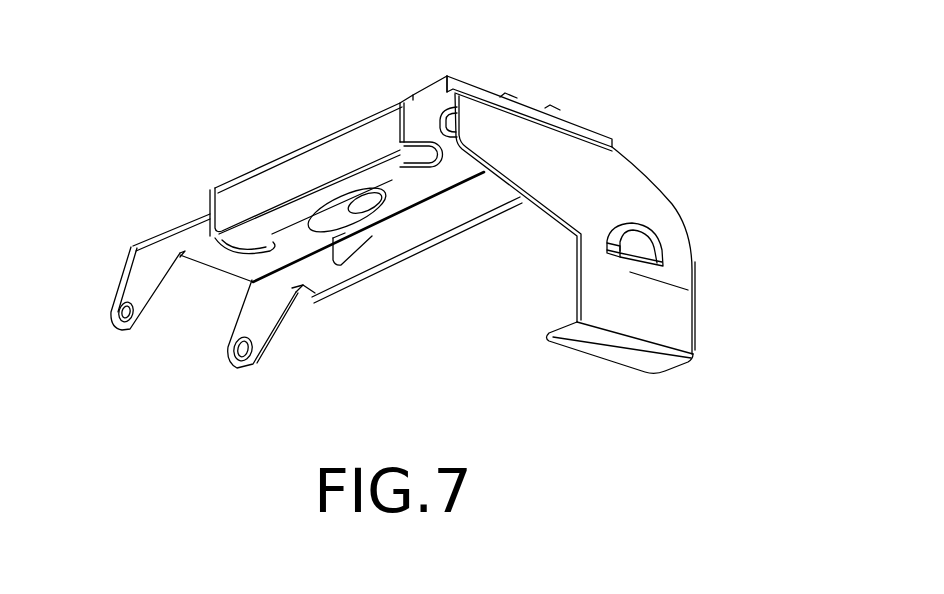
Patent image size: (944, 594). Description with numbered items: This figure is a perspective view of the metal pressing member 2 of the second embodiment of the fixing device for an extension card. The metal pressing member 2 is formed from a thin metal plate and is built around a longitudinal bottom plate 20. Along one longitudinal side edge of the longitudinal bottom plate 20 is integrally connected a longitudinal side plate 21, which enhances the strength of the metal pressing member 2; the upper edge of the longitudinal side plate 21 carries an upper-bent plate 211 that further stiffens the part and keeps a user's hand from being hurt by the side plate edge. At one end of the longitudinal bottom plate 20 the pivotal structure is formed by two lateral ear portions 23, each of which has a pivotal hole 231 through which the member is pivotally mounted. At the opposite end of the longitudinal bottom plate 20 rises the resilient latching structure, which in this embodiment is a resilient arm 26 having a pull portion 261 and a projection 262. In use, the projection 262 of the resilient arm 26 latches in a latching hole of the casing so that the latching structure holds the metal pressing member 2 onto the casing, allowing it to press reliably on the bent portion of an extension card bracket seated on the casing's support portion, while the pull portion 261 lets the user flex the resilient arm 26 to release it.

The metal pressing member 2 is at (681, 33).
The longitudinal bottom plate 20 is at (302, 245).
The longitudinal side plate 21 is at (418, 217).
The upper-bent plate 211 is at (330, 200).
The lateral ear portions 23 is at (257, 321).
The pivotal hole 231 is at (232, 361).
The resilient arm 26 is at (633, 182).
The pull portion 261 is at (658, 302).
The projection 262 is at (646, 242).